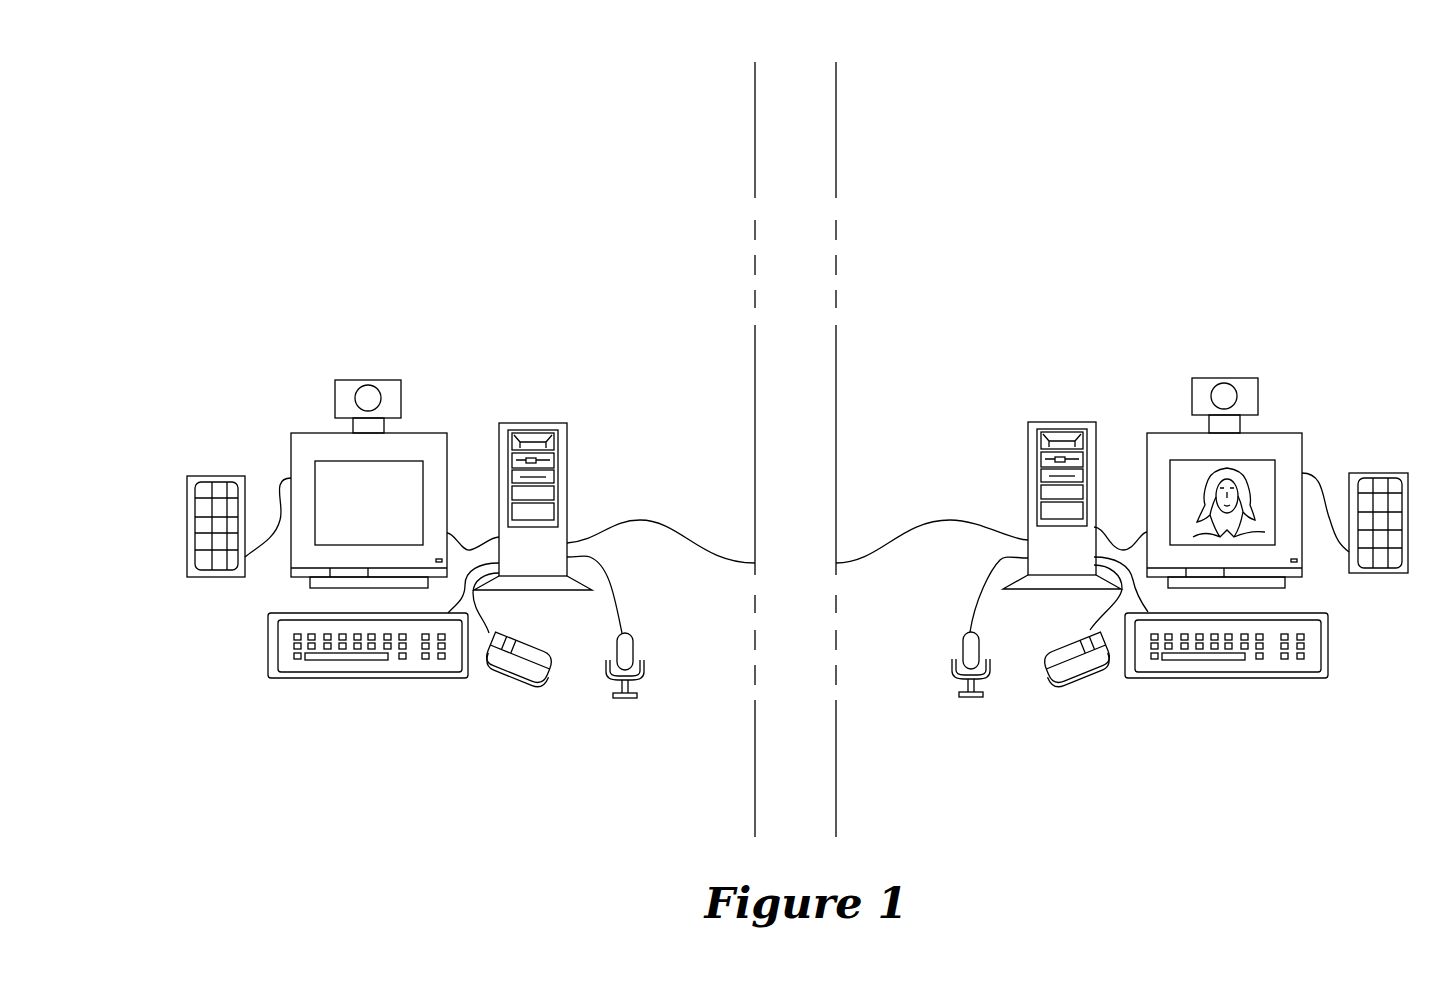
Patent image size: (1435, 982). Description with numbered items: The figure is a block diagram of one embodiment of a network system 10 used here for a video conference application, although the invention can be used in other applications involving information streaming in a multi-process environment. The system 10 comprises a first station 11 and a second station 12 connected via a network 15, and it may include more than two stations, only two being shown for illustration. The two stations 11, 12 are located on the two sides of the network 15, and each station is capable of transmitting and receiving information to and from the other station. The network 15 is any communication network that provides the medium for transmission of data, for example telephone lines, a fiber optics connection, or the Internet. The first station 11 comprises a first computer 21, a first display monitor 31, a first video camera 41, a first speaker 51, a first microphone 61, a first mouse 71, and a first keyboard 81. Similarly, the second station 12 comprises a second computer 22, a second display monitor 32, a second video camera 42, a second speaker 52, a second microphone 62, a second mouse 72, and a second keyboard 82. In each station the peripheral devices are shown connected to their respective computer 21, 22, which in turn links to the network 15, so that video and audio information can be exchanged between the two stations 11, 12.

The network system 10 is at (1235, 183).
The first station 11 is at (957, 788).
The second station 12 is at (692, 788).
The network 15 is at (783, 498).
The first computer 21 is at (1094, 453).
The second computer 22 is at (567, 455).
The first display monitor 31 is at (1293, 435).
The second display monitor 32 is at (380, 541).
The first video camera 41 is at (1220, 378).
The second video camera 42 is at (388, 380).
The first speaker 51 is at (1383, 568).
The second speaker 52 is at (218, 577).
The first microphone 61 is at (982, 642).
The second microphone 62 is at (637, 648).
The first mouse 71 is at (1047, 647).
The second mouse 72 is at (532, 636).
The first keyboard 81 is at (1198, 678).
The second keyboard 82 is at (290, 680).